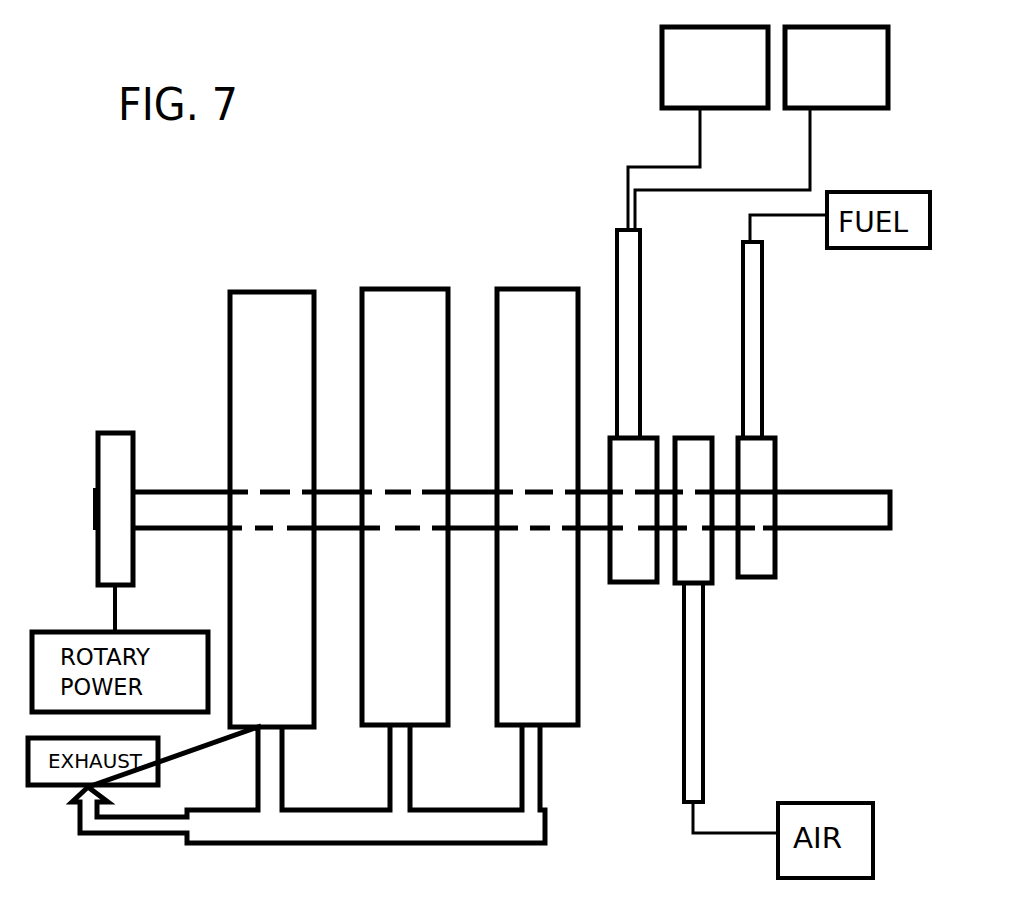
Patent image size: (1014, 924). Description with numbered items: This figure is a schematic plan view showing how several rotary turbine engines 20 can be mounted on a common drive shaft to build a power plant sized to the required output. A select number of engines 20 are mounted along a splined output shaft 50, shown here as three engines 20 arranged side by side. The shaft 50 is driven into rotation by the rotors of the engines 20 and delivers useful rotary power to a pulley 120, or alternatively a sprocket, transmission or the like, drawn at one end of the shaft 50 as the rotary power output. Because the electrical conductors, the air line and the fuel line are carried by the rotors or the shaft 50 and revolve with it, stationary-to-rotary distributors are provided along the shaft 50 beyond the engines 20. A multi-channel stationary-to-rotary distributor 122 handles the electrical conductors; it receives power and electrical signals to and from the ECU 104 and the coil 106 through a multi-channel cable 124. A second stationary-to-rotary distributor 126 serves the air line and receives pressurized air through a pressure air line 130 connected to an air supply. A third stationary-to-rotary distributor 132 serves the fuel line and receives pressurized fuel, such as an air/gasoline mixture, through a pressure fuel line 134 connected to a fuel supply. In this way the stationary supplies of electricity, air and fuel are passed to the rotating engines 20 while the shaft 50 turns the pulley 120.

The engine 20 is at (258, 295).
The splined output shaft 50 is at (807, 490).
The ECU 104 is at (698, 128).
The coil 106 is at (761, 128).
The pulley 120 is at (122, 443).
The multi-channel stationary-to-rotary distributor 122 is at (630, 583).
The multi-channel cable 124 is at (638, 395).
The stationary-to-rotary distributor 126 is at (695, 558).
The pressure air line 130 is at (667, 736).
The stationary-to-rotary distributor 132 is at (772, 563).
The pressure fuel line 134 is at (760, 332).